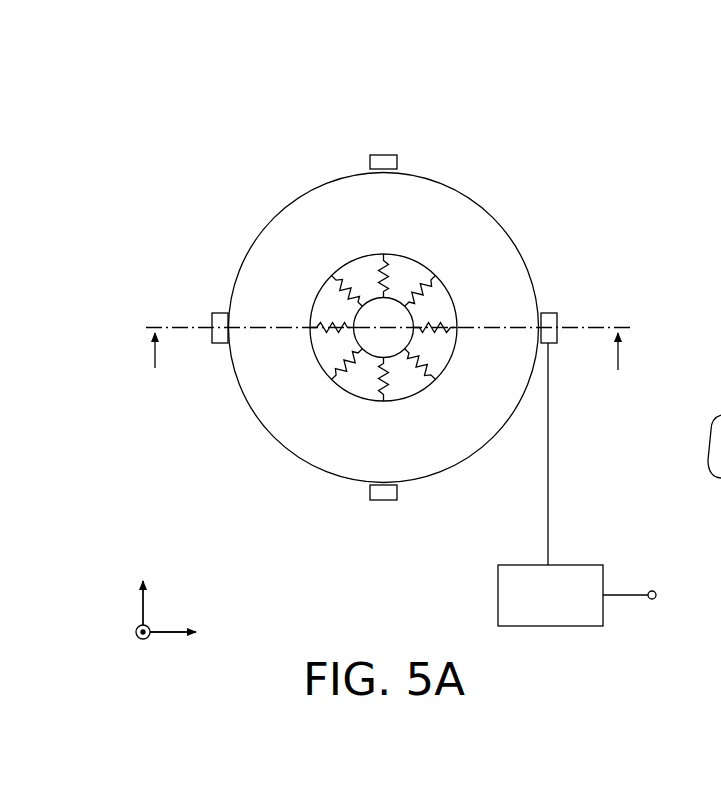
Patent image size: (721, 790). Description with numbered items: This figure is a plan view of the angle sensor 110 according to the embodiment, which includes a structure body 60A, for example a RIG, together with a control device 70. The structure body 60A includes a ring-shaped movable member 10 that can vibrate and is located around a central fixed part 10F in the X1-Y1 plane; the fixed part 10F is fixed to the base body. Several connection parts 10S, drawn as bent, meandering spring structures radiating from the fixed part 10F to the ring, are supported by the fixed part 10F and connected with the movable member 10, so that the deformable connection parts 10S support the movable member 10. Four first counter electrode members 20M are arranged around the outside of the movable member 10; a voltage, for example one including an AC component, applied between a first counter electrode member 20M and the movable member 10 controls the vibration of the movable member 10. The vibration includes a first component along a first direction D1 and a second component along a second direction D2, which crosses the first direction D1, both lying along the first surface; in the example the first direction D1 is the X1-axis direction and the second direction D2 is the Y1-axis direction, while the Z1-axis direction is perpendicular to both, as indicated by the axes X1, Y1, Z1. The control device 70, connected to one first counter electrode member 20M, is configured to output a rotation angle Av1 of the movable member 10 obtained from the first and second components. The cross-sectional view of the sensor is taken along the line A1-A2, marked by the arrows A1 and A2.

The angle sensor 110 is at (528, 108).
The structure body 60A is at (490, 137).
The movable member 10 is at (499, 257).
The connection part 10S is at (444, 307).
The fixed part 10F is at (387, 320).
The first counter electrode member 20M is at (382, 163).
The control device 70 is at (582, 565).
The rotation angle Av1 is at (653, 599).
The line A1-A2 A1 is at (155, 368).
The line A1- A2 is at (620, 367).
The X1-axis direction X1 is at (191, 624).
The Y1-axis direction Y1 is at (143, 587).
The Z1-axis direction Z1 is at (126, 635).
The first direction D1 is at (191, 649).
The second direction D2 is at (144, 575).